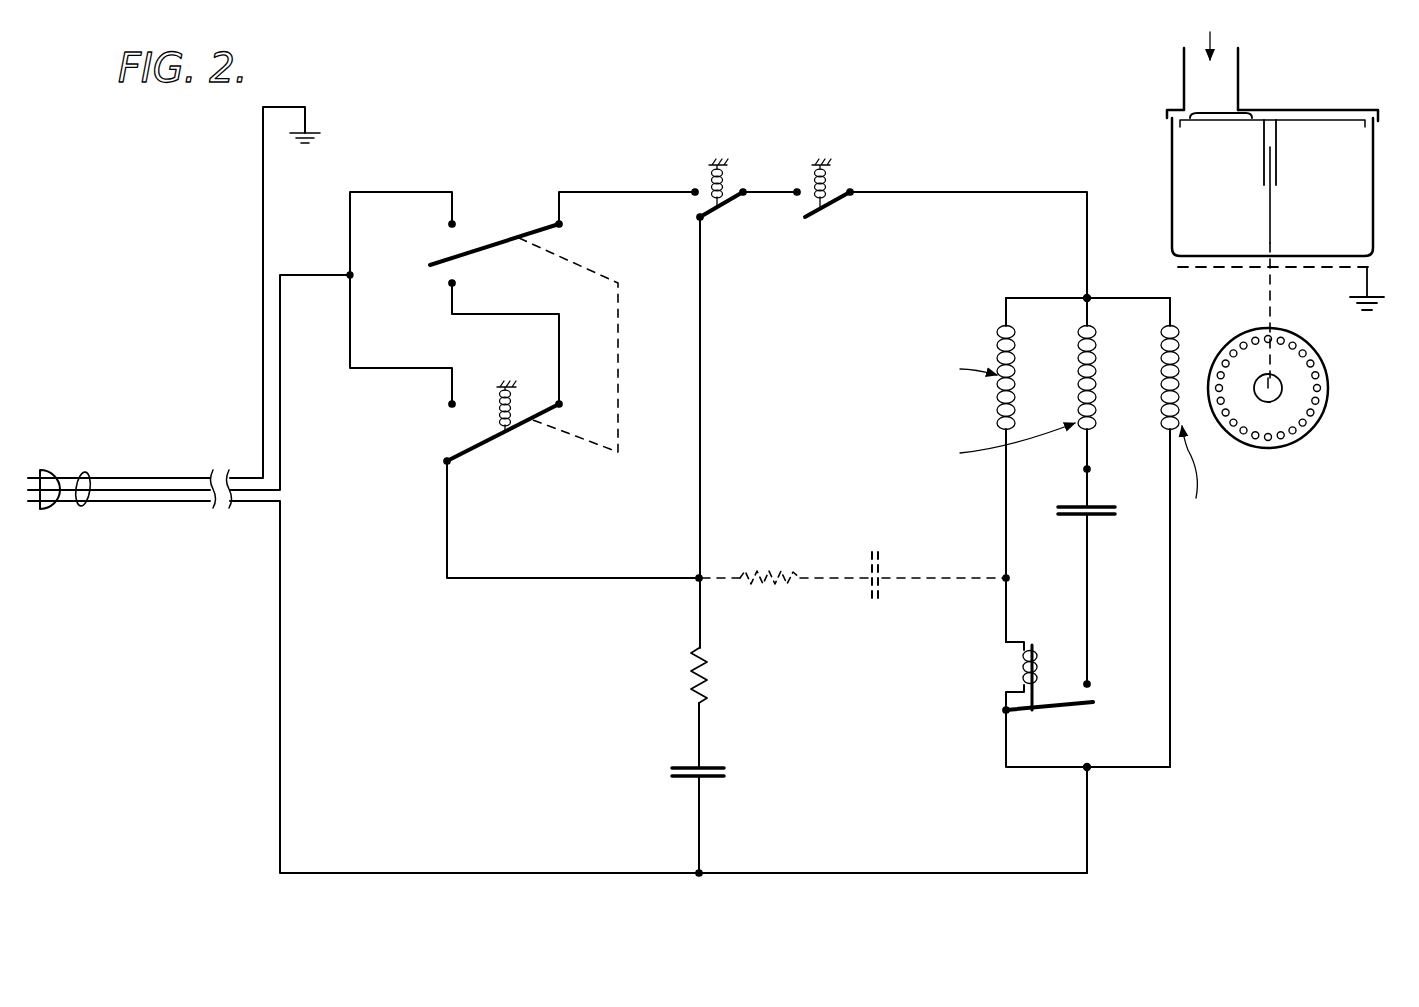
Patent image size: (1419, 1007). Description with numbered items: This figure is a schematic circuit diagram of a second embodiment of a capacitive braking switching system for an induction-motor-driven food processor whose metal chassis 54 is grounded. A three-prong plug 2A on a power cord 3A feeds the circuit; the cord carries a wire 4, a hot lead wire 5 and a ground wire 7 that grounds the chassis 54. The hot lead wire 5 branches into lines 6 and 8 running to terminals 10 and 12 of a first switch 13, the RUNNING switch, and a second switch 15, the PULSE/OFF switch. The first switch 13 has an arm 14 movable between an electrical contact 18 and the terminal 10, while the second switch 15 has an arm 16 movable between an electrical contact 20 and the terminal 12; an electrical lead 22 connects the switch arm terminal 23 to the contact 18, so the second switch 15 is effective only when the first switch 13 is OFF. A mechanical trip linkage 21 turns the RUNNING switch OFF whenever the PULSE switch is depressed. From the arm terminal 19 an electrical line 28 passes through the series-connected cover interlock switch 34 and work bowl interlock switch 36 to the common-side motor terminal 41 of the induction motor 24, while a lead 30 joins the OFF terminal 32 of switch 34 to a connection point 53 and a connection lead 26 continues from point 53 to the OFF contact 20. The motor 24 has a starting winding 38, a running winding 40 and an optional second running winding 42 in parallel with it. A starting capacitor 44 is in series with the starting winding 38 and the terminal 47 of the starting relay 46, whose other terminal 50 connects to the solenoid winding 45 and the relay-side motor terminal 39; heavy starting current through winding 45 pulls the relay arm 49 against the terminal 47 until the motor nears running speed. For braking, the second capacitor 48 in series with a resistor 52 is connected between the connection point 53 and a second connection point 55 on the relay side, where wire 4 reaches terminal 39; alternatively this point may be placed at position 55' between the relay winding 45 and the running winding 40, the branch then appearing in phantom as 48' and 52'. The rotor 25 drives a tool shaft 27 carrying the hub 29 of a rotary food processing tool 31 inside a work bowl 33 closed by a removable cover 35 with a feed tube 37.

The plug 2A is at (38, 509).
The power cord 3A is at (83, 473).
The wire 4 is at (279, 554).
The hot lead wire 5 is at (281, 421).
The line 6 is at (398, 192).
The ground wire 7 is at (262, 212).
The line 8 is at (378, 370).
The electrical terminal 10 is at (465, 224).
The electrical terminal 12 is at (462, 400).
The first switch 13 is at (498, 195).
The arm 14 is at (494, 248).
The second switch 15 is at (537, 449).
The arm 16 is at (498, 433).
The electrical contact 18 is at (465, 283).
The arm terminal 19 is at (562, 224).
The electrical contact 20 is at (475, 477).
The mechanical trip linkage 21 is at (620, 313).
The electrical lead 22 is at (561, 359).
The switch arm terminal 23 is at (562, 405).
The induction motor 24 is at (995, 285).
The rotor 25 is at (1318, 351).
The connection lead 26 is at (525, 580).
The tool shaft 27 is at (1272, 216).
The electrical line 28 is at (602, 192).
The hub 29 is at (1278, 172).
The lead 30 is at (702, 418).
The rotary food processing tool 31 is at (1200, 115).
The OFF terminal 32 is at (703, 220).
The work bowl 33 is at (1172, 155).
The cover interlock switch 34 is at (697, 178).
The removable cover 35 is at (1300, 110).
The work bowl interlock switch 36 is at (838, 183).
The feed tube 37 is at (1182, 66).
The starting winding 38 is at (1097, 377).
The motor terminal 39 is at (1089, 770).
The running winding 40 is at (1016, 367).
The motor terminal 41 is at (1090, 296).
The second running winding 42 is at (1158, 347).
The starting capacitor 44 is at (1112, 511).
The solenoid winding 45 is at (1038, 662).
The starting relay 46 is at (1004, 667).
The terminal 47 is at (1089, 682).
The second capacitor 48 is at (725, 764).
The alternative capacitor 48' is at (928, 602).
The relay arm 49 is at (1068, 706).
The terminal 50 is at (1004, 712).
The resistor 52 is at (726, 675).
The alternative resistor 52' is at (785, 598).
The connection point 53 is at (697, 582).
The metal chassis 54 is at (1350, 268).
The second connection point 55 is at (721, 890).
The alternative connection point 55' is at (985, 564).